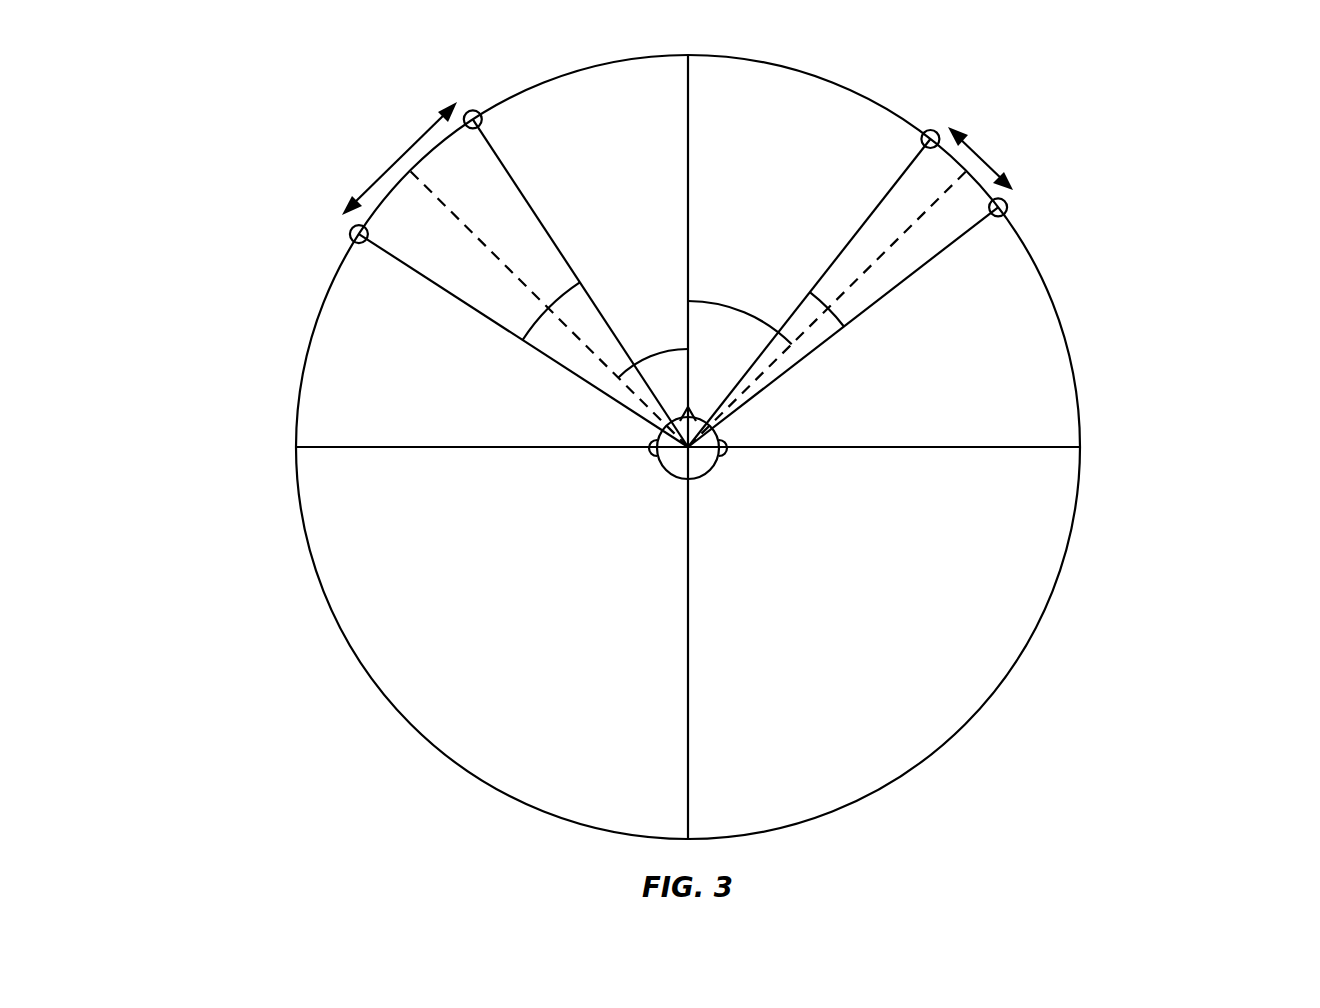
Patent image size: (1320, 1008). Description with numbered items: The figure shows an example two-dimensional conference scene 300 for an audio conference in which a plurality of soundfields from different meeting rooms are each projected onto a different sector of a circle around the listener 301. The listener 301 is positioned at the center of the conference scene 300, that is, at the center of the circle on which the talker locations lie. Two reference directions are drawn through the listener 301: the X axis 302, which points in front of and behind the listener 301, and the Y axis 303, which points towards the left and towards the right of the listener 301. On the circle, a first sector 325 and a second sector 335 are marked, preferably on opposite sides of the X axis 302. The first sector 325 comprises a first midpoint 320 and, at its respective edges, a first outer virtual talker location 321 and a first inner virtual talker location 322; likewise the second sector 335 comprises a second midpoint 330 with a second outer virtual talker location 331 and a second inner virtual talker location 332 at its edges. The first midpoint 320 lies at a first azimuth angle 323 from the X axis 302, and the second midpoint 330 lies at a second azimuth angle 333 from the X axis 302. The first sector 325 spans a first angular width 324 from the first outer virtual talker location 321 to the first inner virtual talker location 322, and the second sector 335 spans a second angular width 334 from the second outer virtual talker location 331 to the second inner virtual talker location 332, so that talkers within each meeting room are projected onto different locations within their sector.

The conference scene 300 is at (208, 116).
The listener 301 is at (703, 477).
The X axis 302 is at (694, 157).
The Y axis 303 is at (927, 447).
The first midpoint 320 is at (410, 167).
The first outer virtual talker location 321 is at (349, 232).
The first inner virtual talker location 322 is at (475, 109).
The first azimuth angle 323 is at (684, 350).
The first angular width 324 is at (553, 298).
The first sector 325 is at (423, 128).
The second midpoint 330 is at (960, 182).
The second outer virtual talker location 331 is at (1008, 208).
The second inner virtual talker location 332 is at (930, 130).
The second azimuth angle 333 is at (700, 297).
The second angular width 334 is at (835, 310).
The second sector 335 is at (973, 148).